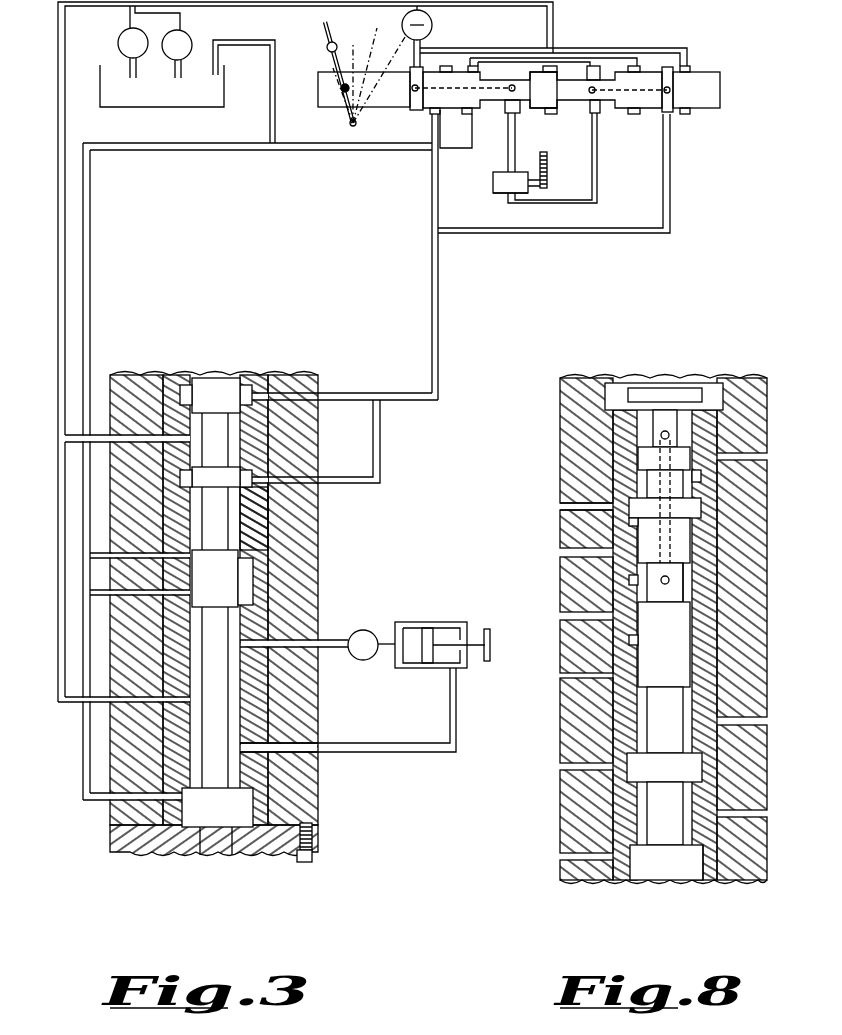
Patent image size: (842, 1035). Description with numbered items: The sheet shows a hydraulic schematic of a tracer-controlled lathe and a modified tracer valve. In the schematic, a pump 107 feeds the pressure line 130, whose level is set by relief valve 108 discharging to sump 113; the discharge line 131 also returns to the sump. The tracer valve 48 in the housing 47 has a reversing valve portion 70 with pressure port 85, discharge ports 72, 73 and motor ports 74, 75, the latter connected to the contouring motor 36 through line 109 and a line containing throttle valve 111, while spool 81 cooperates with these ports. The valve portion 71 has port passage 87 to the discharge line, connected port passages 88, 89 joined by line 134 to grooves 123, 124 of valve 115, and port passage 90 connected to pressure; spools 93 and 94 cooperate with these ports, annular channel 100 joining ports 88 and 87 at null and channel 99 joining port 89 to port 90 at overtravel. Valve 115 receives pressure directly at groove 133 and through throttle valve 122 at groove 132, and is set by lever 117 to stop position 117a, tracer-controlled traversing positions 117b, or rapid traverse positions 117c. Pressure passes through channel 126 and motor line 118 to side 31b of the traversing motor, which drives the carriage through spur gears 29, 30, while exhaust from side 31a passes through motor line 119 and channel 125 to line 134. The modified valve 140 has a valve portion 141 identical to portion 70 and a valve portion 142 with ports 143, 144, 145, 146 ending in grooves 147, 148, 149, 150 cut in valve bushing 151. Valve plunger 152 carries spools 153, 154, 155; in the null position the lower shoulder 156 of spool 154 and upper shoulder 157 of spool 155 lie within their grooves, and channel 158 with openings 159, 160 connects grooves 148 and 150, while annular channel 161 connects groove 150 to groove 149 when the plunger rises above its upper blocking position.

In FIG. 3, the pump 107 is at (119, 38).
In FIG. 3, the relief valve 108 is at (190, 38).
In FIG. 3, the sump 113 is at (226, 108).
In FIG. 3, the lever 117 is at (351, 74).
In FIG. 3, the lever position 117a is at (358, 60).
In FIG. 3, the lever position 117b is at (337, 43).
In FIG. 3, the lever position 117c is at (325, 76).
In FIG. 3, the throttle valve 122 is at (432, 28).
In FIG. 3, the groove 123 is at (446, 66).
In FIG. 3, the valve 115 is at (703, 71).
In FIG. 3, the groove 124 is at (669, 113).
In FIG. 3, the channel 125 is at (648, 102).
In FIG. 3, the channel 126 is at (493, 100).
In FIG. 3, the motor line 118 is at (517, 125).
In FIG. 3, the motor line 119 is at (599, 125).
In FIG. 3, the groove 133 is at (552, 114).
In FIG. 3, the groove 132 is at (416, 111).
In FIG. 3, the discharge line 131 is at (92, 283).
In FIG. 3, the line 134 is at (439, 309).
In FIG. 3, the pressure line 130 is at (57, 545).
In FIG. 3, the motor side 31a is at (507, 195).
In FIG. 3, the motor side 31b is at (497, 172).
In FIG. 3, the spur gear 29 is at (548, 183).
In FIG. 3, the spur gear 30 is at (548, 156).
In FIG. 3, the spool 94 is at (226, 401).
In FIG. 3, the spool 93 is at (226, 486).
In FIG. 3, the spool 81 is at (224, 588).
In FIG. 3, the port passage 89 is at (300, 400).
In FIG. 3, the port passage 88 is at (300, 490).
In FIG. 3, the channel 99 is at (320, 443).
In FIG. 3, the annular channel 100 is at (250, 535).
In FIG. 3, the port passage 90 is at (124, 433).
In FIG. 3, the port passage 87 is at (123, 552).
In FIG. 3, the discharge port 72 is at (131, 597).
In FIG. 3, the pressure port 85 is at (133, 693).
In FIG. 3, the discharge port 73 is at (115, 800).
In FIG. 3, the motor port 75 is at (292, 649).
In FIG. 3, the motor port 74 is at (306, 744).
In FIG. 3, the line 109 is at (428, 753).
In FIG. 3, the throttle valve 111 is at (353, 634).
In FIG. 3, the contouring motor 36 is at (426, 622).
In FIG. 3, the valve portion 70 is at (133, 726).
In FIG. 3, the valve portion 71 is at (293, 541).
In FIG. 3, the tracer valve 48 is at (112, 819).
In FIG. 8, the housing 47 is at (767, 400).
In FIG. 8, the valve 140 is at (559, 872).
In FIG. 8, the valve portion 141 is at (554, 777).
In FIG. 8, the valve portion 142 is at (558, 526).
In FIG. 8, the port passage 143 is at (567, 622).
In FIG. 8, the port passage 144 is at (563, 563).
In FIG. 8, the port passage 145 is at (567, 503).
In FIG. 8, the port passage 146 is at (757, 482).
In FIG. 8, the groove 147 is at (628, 639).
In FIG. 8, the groove 148 is at (629, 579).
In FIG. 8, the groove 149 is at (628, 519).
In FIG. 8, the groove 150 is at (768, 500).
In FIG. 8, the valve bushing 151 is at (708, 872).
In FIG. 8, the valve plunger 152 is at (648, 873).
In FIG. 8, the spool 153 is at (677, 641).
In FIG. 8, the spool 154 is at (684, 535).
In FIG. 8, the spool 155 is at (688, 455).
In FIG. 8, the lower shoulder 156 is at (684, 575).
In FIG. 8, the upper shoulder 157 is at (645, 452).
In FIG. 8, the channel 158 is at (657, 479).
In FIG. 8, the opening 159 is at (669, 583).
In FIG. 8, the opening 160 is at (671, 437).
In FIG. 8, the annular channel 161 is at (701, 508).